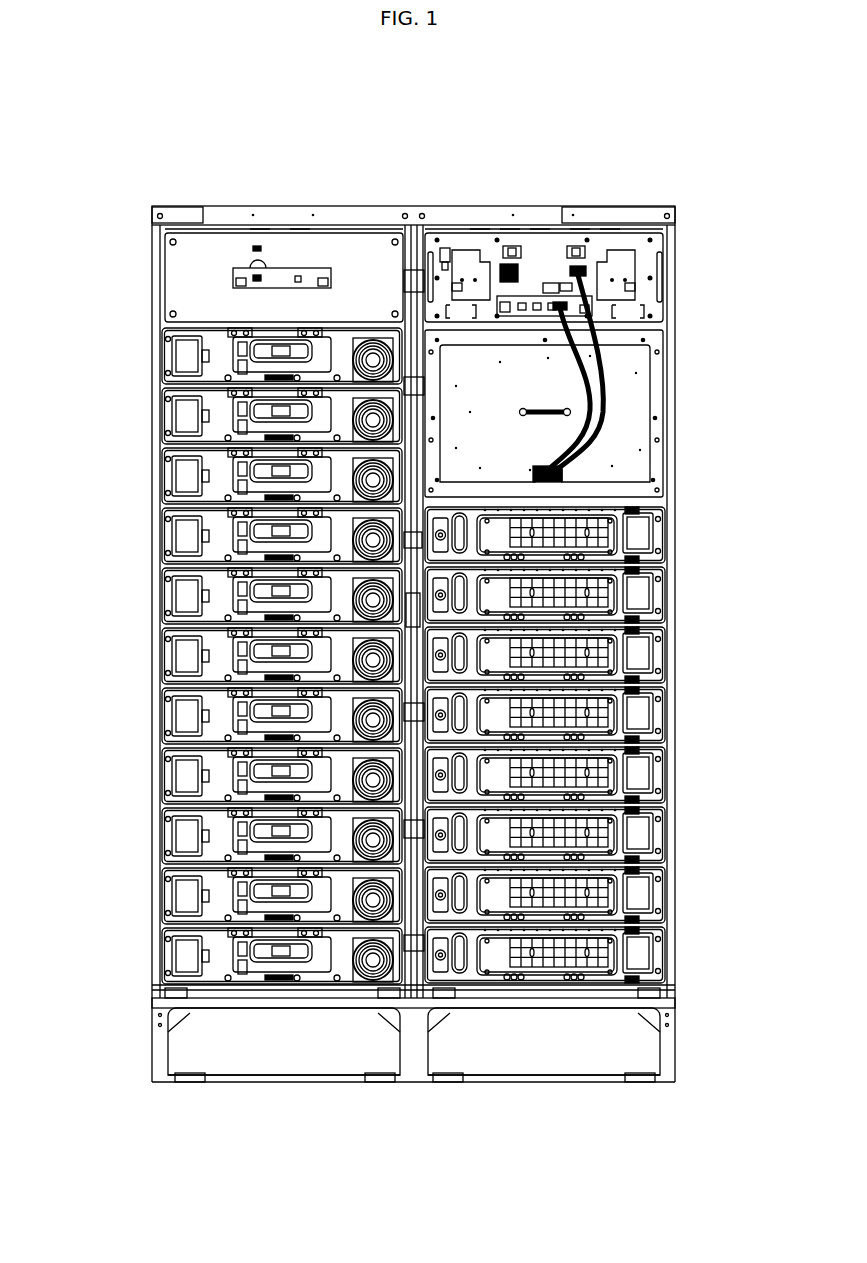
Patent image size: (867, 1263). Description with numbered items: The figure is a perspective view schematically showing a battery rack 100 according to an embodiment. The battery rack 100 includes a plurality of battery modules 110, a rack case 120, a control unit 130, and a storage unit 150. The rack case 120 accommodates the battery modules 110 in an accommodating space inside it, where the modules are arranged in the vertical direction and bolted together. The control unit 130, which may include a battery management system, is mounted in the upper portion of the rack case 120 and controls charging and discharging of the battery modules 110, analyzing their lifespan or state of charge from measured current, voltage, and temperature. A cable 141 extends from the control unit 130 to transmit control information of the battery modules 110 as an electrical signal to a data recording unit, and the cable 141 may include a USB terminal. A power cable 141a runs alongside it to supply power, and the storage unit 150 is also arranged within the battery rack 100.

The battery rack 100 is at (210, 89).
The battery module 110 is at (208, 342).
The rack case 120 is at (148, 252).
The control unit 130 is at (545, 245).
The cable 141 is at (595, 402).
The power cable 141a is at (597, 438).
The storage unit 150 is at (640, 386).